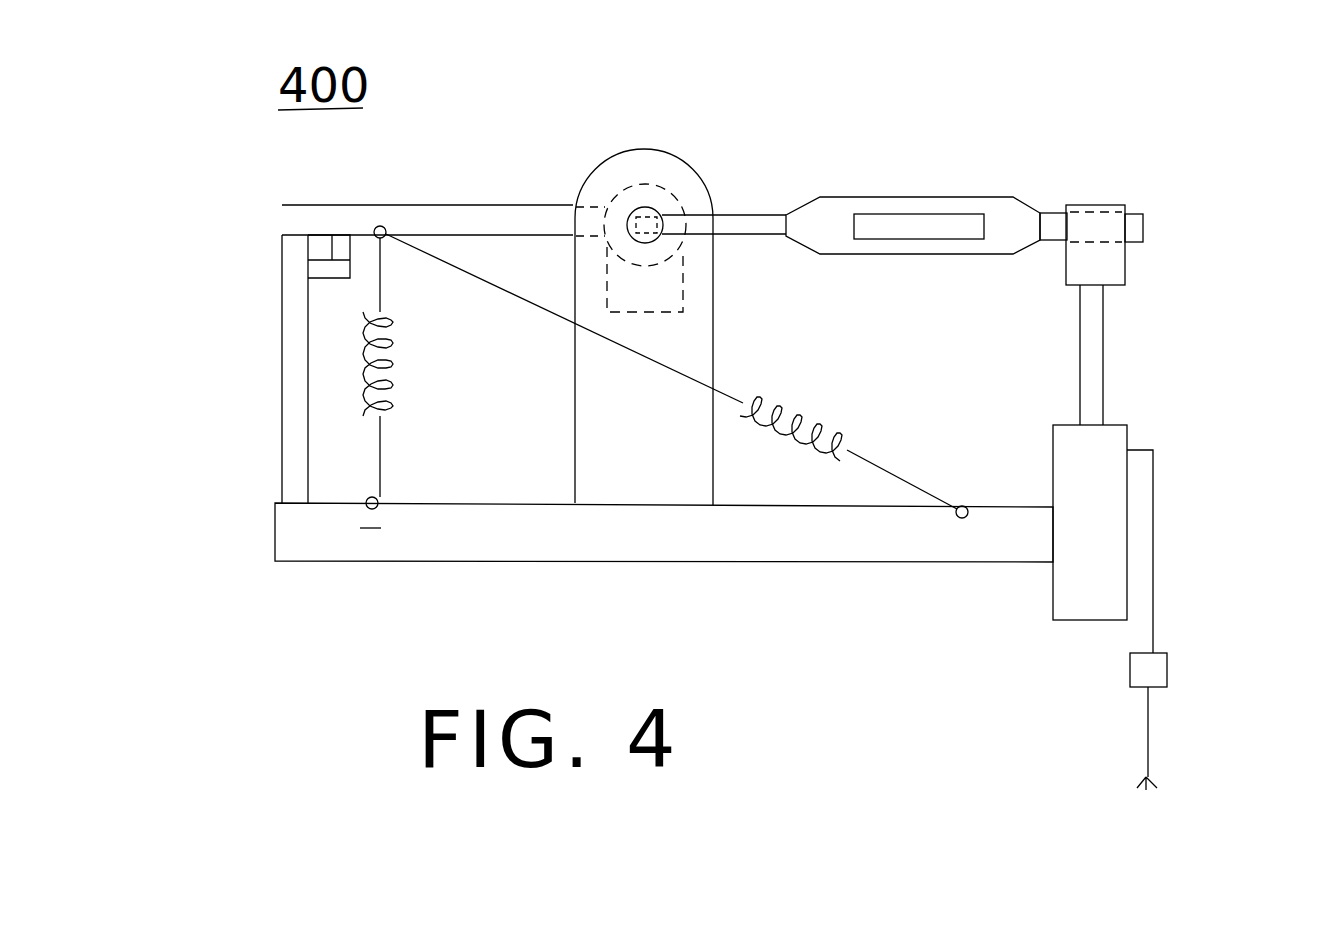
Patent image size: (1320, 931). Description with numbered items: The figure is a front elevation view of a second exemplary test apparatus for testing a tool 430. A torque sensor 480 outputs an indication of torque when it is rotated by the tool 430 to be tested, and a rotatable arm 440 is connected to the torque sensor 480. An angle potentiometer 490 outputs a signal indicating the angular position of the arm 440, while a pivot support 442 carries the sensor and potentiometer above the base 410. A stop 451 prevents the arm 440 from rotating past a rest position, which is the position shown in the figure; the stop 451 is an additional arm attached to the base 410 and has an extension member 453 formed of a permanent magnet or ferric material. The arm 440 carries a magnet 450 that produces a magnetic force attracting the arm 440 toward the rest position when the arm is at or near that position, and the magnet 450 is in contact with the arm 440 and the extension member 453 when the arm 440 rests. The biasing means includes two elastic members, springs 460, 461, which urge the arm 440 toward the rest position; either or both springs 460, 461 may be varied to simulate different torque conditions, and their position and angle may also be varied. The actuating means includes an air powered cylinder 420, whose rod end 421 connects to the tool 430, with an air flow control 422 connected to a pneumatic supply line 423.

The base 410 is at (698, 563).
The air powered cylinder 420 is at (1083, 598).
The actuator rod end 421 is at (1087, 202).
The air flow control 422 is at (1130, 676).
The pneumatic supply line 423 is at (1158, 767).
The tool 430 is at (1028, 158).
The rotatable arm 440 is at (507, 218).
The pivot support 442 is at (607, 158).
The magnet 450 is at (333, 248).
The stop 451 is at (290, 412).
The extension member 453 is at (352, 274).
The spring 460 is at (400, 375).
The spring 461 is at (807, 413).
The torque sensor 480 is at (680, 297).
The angle potentiometer 490 is at (652, 210).